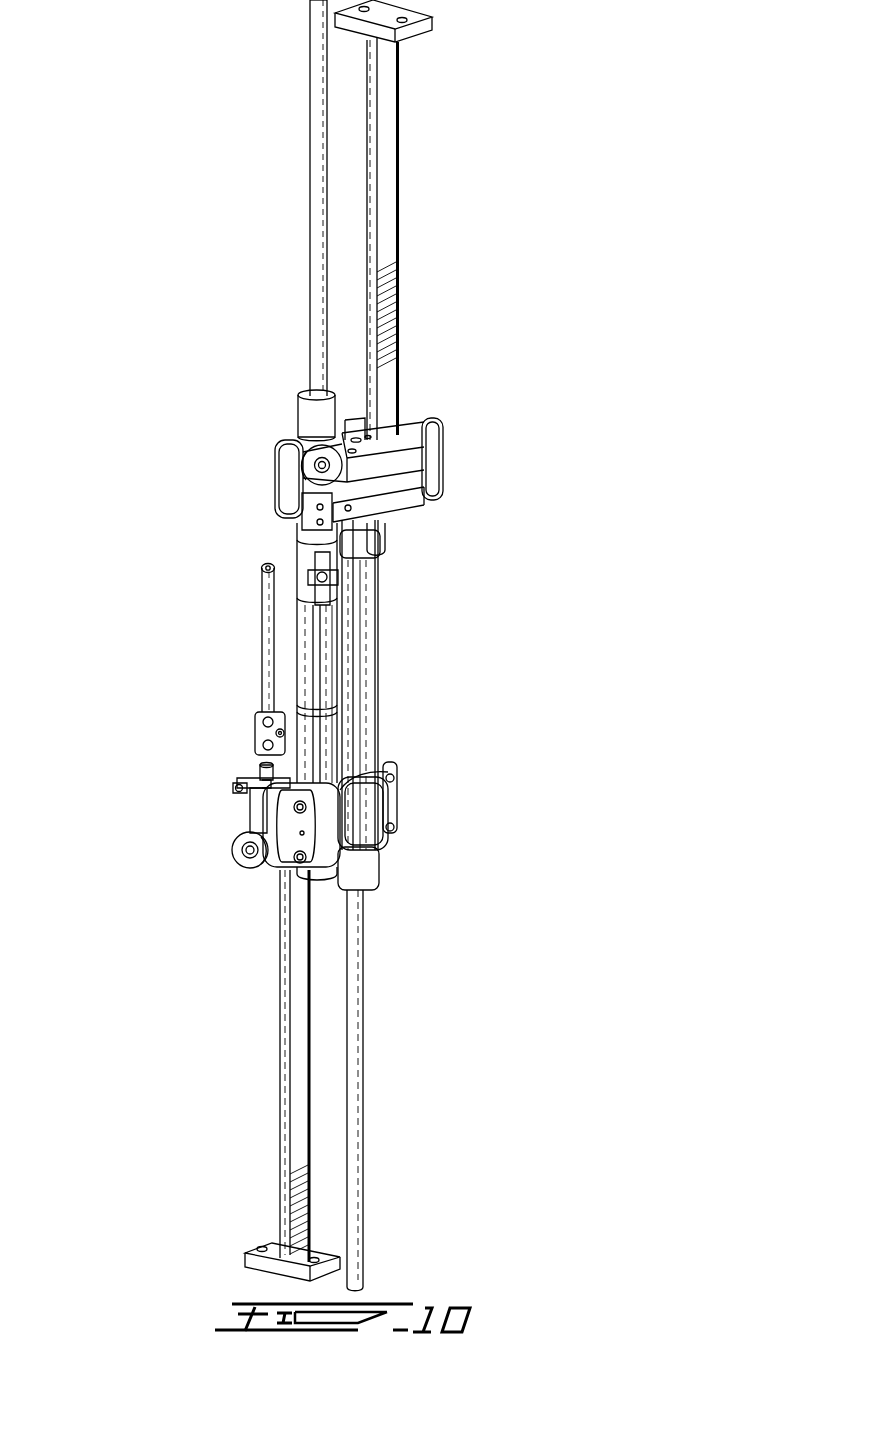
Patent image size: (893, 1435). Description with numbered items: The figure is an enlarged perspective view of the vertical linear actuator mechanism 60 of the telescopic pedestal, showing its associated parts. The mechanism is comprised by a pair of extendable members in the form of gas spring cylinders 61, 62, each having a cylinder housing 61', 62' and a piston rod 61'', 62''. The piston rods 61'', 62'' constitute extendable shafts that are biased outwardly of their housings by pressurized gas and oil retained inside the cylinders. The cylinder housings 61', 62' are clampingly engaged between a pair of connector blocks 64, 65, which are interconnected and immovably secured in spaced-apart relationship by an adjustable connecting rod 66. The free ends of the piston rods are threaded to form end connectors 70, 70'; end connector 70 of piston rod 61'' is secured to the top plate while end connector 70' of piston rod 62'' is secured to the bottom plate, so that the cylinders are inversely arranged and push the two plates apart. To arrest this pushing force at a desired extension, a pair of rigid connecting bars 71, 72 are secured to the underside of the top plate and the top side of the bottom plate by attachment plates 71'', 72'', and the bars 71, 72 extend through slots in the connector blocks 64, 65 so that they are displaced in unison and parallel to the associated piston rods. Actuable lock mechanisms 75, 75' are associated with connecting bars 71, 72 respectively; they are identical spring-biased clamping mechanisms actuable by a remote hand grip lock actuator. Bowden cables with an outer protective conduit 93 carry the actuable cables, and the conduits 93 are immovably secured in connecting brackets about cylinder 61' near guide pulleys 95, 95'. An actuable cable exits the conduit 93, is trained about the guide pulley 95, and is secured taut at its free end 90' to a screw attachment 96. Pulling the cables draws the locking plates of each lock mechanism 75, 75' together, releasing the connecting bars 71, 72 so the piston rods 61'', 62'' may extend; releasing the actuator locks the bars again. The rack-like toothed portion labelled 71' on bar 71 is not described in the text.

The vertical linear actuator mechanism 60 is at (196, 440).
The gas spring cylinder 61 is at (244, 701).
The cylinder housing 61' is at (251, 694).
The piston rod 61'' is at (271, 198).
The gas spring cylinder 62 is at (423, 705).
The cylinder housing 62' is at (429, 705).
The piston rod 62'' is at (420, 1086).
The connector block 64 is at (452, 468).
The connector block 65 is at (388, 823).
The adjustable connecting rod 66 is at (342, 625).
The end connector 70 is at (272, 15).
The end connector 70' is at (411, 1265).
The connecting bar 71 is at (438, 296).
The upper rail rack 71' is at (437, 312).
The attachment plate 71'' is at (436, 21).
The connecting bar 72 is at (241, 1066).
The attachment plate 72'' is at (262, 1237).
The actuable lock mechanism 75 is at (415, 386).
The actuable lock mechanism 75' is at (211, 734).
The actuable cable 90' is at (208, 672).
The outer protective conduit 93 is at (264, 598).
The guide pulley 95 is at (216, 870).
The guide pulley 95' is at (282, 435).
The screw attachment 96 is at (262, 782).